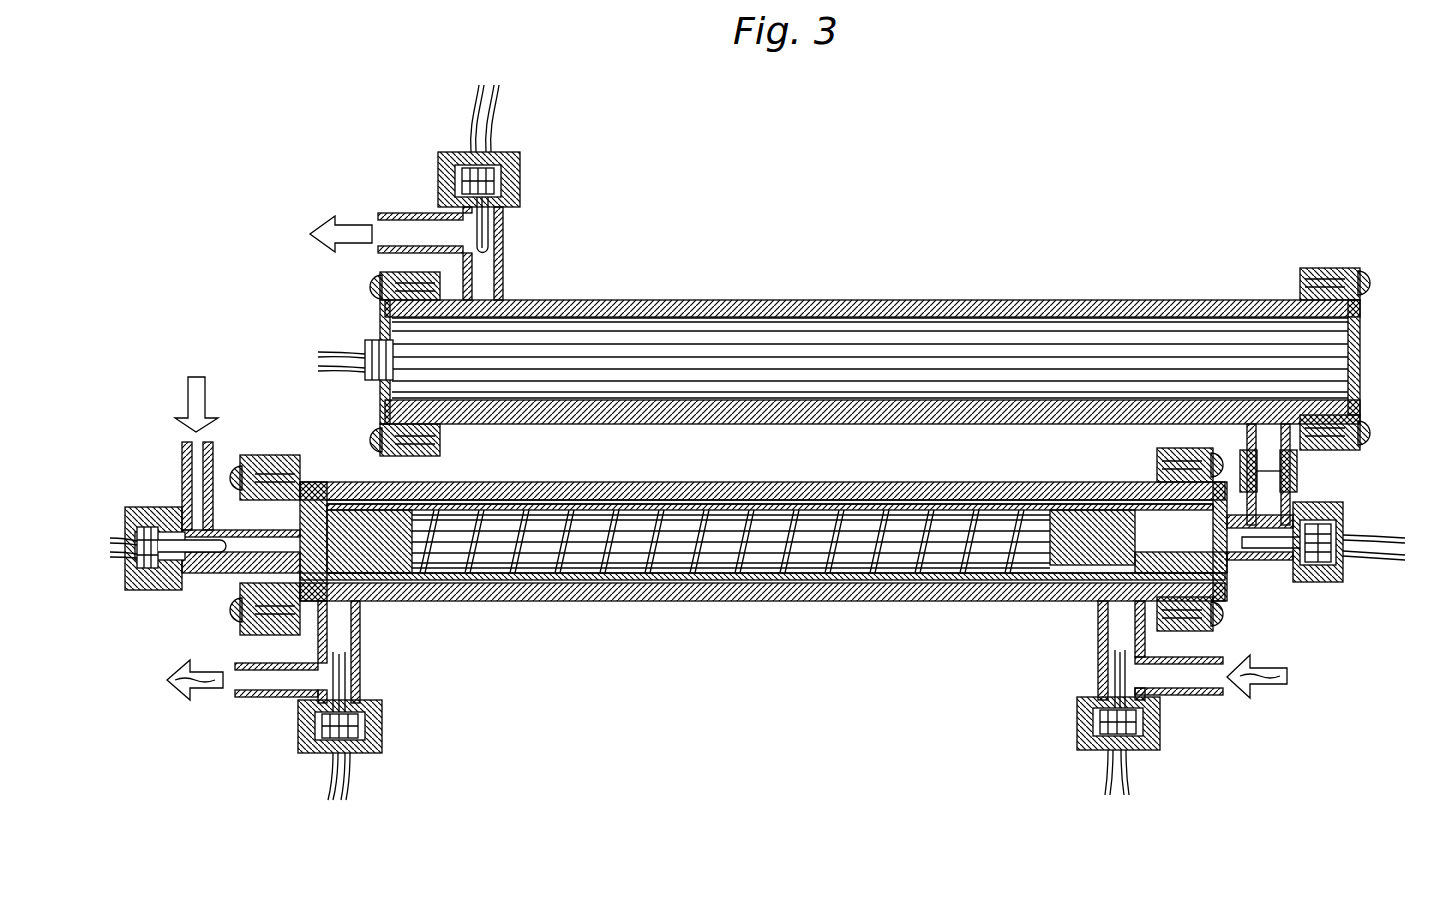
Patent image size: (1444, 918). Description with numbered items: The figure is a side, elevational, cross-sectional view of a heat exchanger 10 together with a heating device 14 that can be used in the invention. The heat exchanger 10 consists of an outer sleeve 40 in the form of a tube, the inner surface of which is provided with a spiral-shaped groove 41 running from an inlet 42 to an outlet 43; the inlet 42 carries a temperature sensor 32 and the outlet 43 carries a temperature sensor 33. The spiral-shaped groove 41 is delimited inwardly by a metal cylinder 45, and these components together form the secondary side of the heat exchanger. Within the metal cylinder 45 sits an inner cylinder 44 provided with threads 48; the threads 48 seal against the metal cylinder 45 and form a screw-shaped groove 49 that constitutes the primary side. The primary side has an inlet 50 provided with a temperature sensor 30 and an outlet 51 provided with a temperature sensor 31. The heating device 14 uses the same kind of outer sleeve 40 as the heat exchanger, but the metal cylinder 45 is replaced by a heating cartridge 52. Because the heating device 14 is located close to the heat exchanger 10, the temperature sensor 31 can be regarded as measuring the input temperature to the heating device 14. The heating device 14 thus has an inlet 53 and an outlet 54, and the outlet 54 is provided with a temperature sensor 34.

The heat exchanger 10 is at (965, 622).
The heating device 14 is at (1012, 279).
The temperature sensor 30 is at (155, 507).
The temperature sensor 31 is at (1310, 585).
The temperature sensor 32 is at (1103, 722).
The temperature sensor 33 is at (360, 722).
The temperature sensor 34 is at (520, 178).
The outer sleeve 40 is at (700, 483).
The spiral-shaped groove 41 is at (860, 492).
The inlet 42 is at (1115, 633).
The outlet 43 is at (345, 633).
The inner cylinder 44 is at (515, 601).
The metal cylinder 45 is at (565, 483).
The threads 48 is at (660, 601).
The screw-shaped groove 49 is at (810, 601).
The inlet 50 is at (182, 458).
The outlet 51 is at (1265, 563).
The heating cartridge 52 is at (862, 300).
The inlet 53 is at (1272, 440).
The outlet 54 is at (503, 266).